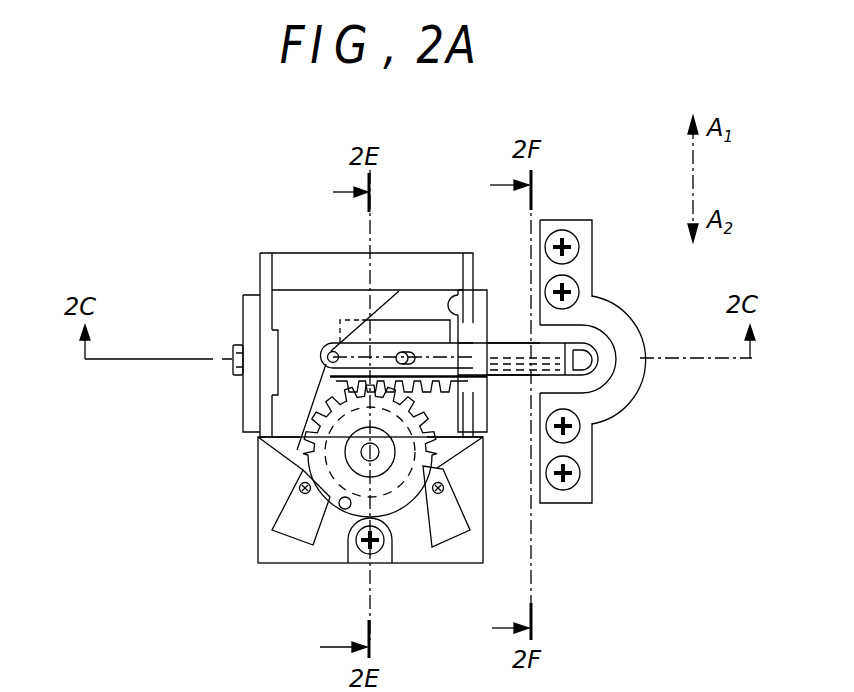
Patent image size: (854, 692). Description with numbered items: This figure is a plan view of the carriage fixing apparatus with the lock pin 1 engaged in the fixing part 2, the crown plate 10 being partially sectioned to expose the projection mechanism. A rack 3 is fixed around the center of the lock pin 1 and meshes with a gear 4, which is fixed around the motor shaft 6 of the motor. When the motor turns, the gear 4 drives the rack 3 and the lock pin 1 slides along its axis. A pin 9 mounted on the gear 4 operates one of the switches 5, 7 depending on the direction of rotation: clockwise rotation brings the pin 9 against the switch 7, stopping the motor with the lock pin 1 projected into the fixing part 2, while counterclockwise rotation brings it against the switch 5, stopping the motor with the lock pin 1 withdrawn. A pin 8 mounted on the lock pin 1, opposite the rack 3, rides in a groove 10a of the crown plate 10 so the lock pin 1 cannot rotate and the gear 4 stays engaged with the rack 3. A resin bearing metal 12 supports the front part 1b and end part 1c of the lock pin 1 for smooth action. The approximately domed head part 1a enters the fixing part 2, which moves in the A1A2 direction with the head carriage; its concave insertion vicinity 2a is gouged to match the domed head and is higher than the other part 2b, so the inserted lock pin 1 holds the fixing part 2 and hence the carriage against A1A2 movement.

The lock pin 1 is at (513, 357).
The head part 1a is at (547, 362).
The front part 1b is at (492, 346).
The end part 1c is at (236, 356).
The fixing part 2 is at (633, 367).
The insertion vicinity 2a is at (592, 380).
The another part 2b is at (600, 492).
The rack 3 is at (437, 386).
The gear 4 is at (440, 407).
The switch 5 is at (444, 527).
The motor shaft 6 is at (367, 462).
The switch 7 is at (288, 528).
The pin 8 is at (404, 352).
The pin 9 is at (339, 503).
The crown plate 10 is at (287, 313).
The groove 10a is at (331, 352).
The resin bearing metal 12 is at (253, 380).